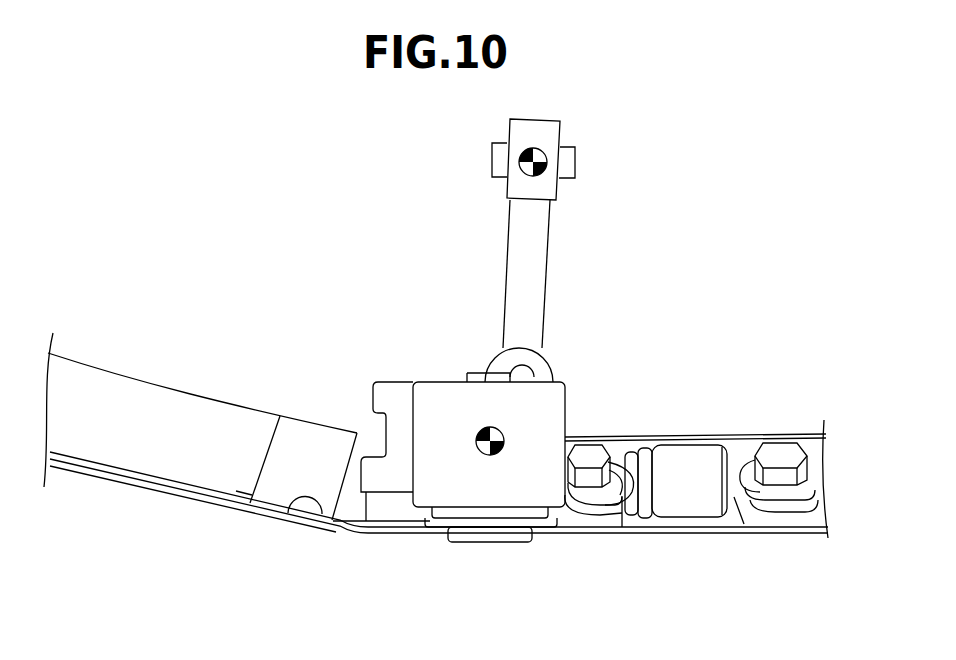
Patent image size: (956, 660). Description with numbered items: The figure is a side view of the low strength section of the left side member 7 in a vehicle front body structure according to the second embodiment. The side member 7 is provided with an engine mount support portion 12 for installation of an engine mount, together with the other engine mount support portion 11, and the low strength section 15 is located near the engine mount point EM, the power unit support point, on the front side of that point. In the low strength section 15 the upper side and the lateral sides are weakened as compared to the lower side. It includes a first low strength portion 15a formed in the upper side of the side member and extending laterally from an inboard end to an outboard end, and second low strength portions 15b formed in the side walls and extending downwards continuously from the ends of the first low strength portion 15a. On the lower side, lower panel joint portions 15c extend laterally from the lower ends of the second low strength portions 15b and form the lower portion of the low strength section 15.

The left side member 7 is at (130, 377).
The low strength section 15 is at (300, 418).
The first low strength portion 15a is at (327, 423).
The second low strength portion 15b is at (292, 457).
The lower panel joint portion 15c is at (322, 514).
The right engine mount support portion 11 is at (548, 362).
The left engine mount support portion 12 is at (542, 408).
The engine mount point EM is at (524, 175).